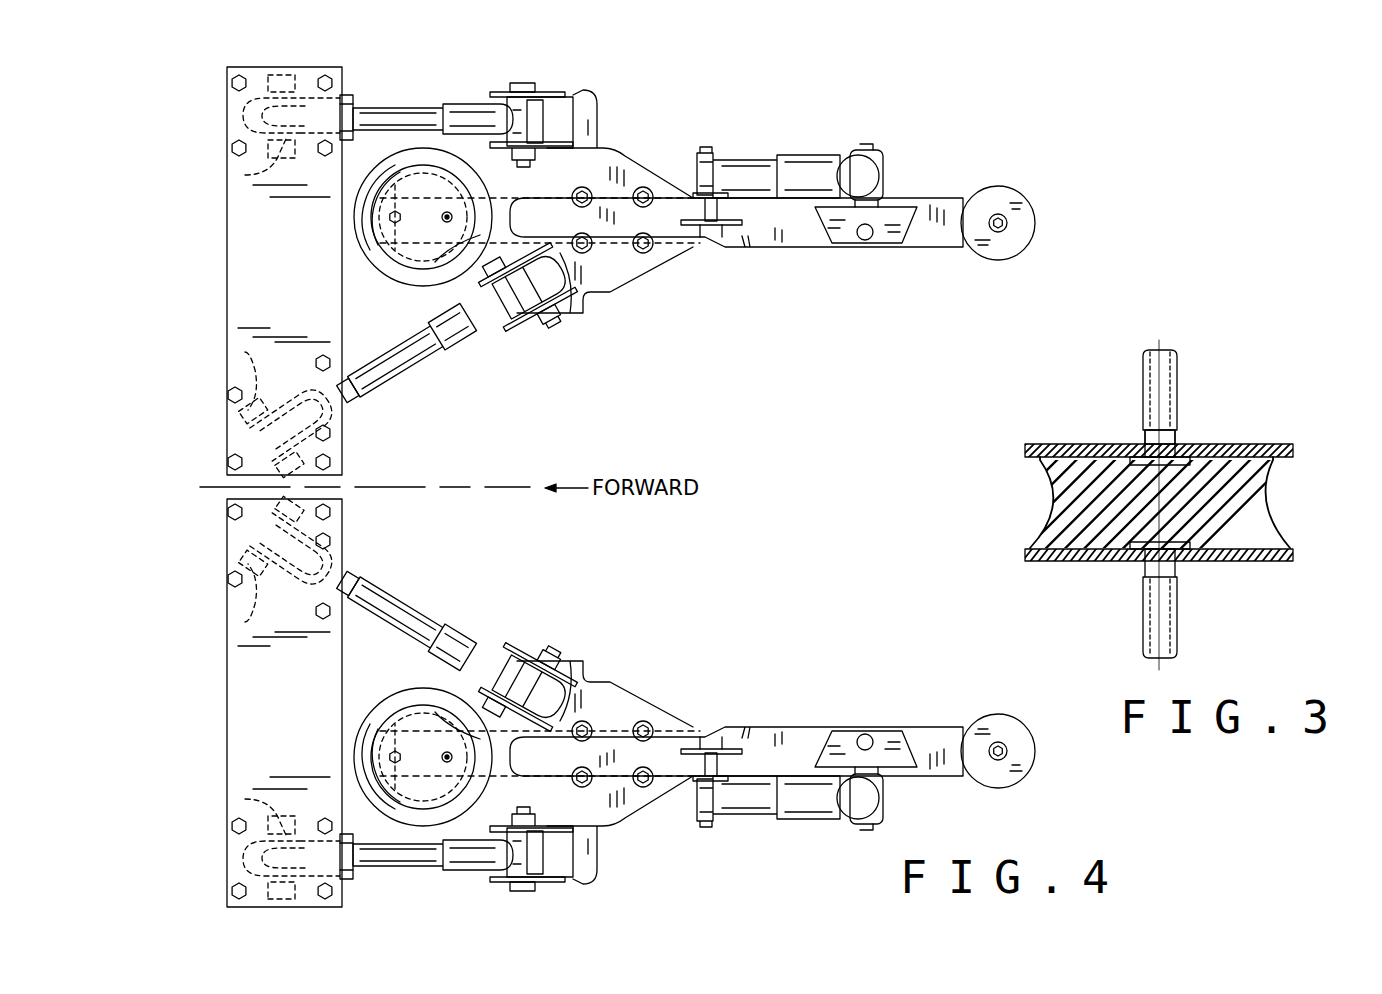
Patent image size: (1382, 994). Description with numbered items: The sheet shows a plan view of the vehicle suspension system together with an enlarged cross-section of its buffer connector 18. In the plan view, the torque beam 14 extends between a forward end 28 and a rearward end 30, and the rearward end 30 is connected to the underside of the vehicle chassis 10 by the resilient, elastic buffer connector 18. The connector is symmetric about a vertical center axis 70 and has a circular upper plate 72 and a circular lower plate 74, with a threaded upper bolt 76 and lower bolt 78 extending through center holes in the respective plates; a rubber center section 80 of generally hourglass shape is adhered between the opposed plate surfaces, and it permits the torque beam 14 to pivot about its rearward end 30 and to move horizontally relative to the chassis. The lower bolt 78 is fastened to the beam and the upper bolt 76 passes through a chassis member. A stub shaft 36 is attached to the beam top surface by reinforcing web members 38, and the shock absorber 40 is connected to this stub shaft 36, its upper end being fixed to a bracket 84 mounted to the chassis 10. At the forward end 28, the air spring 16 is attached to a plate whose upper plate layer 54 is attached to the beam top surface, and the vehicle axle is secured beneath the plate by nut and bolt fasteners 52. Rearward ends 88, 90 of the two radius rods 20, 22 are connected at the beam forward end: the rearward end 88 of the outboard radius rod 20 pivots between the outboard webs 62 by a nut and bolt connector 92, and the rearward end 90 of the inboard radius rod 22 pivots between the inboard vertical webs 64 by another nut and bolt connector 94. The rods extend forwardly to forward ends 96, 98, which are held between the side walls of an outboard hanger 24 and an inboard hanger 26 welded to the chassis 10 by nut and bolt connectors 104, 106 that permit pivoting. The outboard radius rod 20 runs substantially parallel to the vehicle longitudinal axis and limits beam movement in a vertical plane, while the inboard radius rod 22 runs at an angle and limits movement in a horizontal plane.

In FIG. 4, the vehicle chassis 10 is at (250, 270).
In FIG. 4, the torque beam 14 is at (930, 195).
In FIG. 4, the air spring 16 is at (405, 150).
In FIG. 4, the buffer connector 18 is at (997, 262).
In FIG. 3, the buffer connector 18 is at (1106, 432).
In FIG. 4, the outboard radius rod 20 is at (390, 105).
In FIG. 4, the inboard radius rod 22 is at (432, 358).
In FIG. 4, the outboard hanger 24 is at (240, 130).
In FIG. 4, the inboard hanger 26 is at (237, 432).
In FIG. 4, the forward end 28 is at (463, 280).
In FIG. 4, the rearward end 30 is at (963, 190).
In FIG. 4, the stub shaft 36 is at (710, 228).
In FIG. 4, the reinforcing web members 38 is at (690, 193).
In FIG. 4, the shock absorber 40 is at (800, 160).
In FIG. 4, the nut and bolt fasteners 52 is at (645, 190).
In FIG. 4, the upper plate layer 54 is at (590, 122).
In FIG. 4, the outboard webs 62 is at (522, 83).
In FIG. 4, the inboard vertical webs 64 is at (592, 296).
In FIG. 3, the vertical center axis 70 is at (1160, 375).
In FIG. 4, the upper plate 72 is at (1025, 230).
In FIG. 3, the upper plate 72 is at (1240, 443).
In FIG. 3, the lower plate 74 is at (1270, 565).
In FIG. 4, the upper bolt 76 is at (1008, 218).
In FIG. 3, the upper bolt 76 is at (1180, 405).
In FIG. 3, the lower bolt 78 is at (1180, 632).
In FIG. 3, the rubber center section 80 is at (1262, 500).
In FIG. 4, the bracket 84 is at (885, 240).
In FIG. 4, the rearward end of outboard radius rod 88 is at (480, 97).
In FIG. 4, the rearward end of inboard radius rod 90 is at (527, 325).
In FIG. 4, the nut and bolt connector 92 is at (505, 91).
In FIG. 4, the nut and bolt connector 94 is at (490, 315).
In FIG. 4, the forward end of outboard radius rod 96 is at (346, 95).
In FIG. 4, the forward end of inboard radius rod 98 is at (350, 418).
In FIG. 4, the nut and bolt connector 104 is at (245, 177).
In FIG. 4, the nut and bolt connector 106 is at (245, 353).